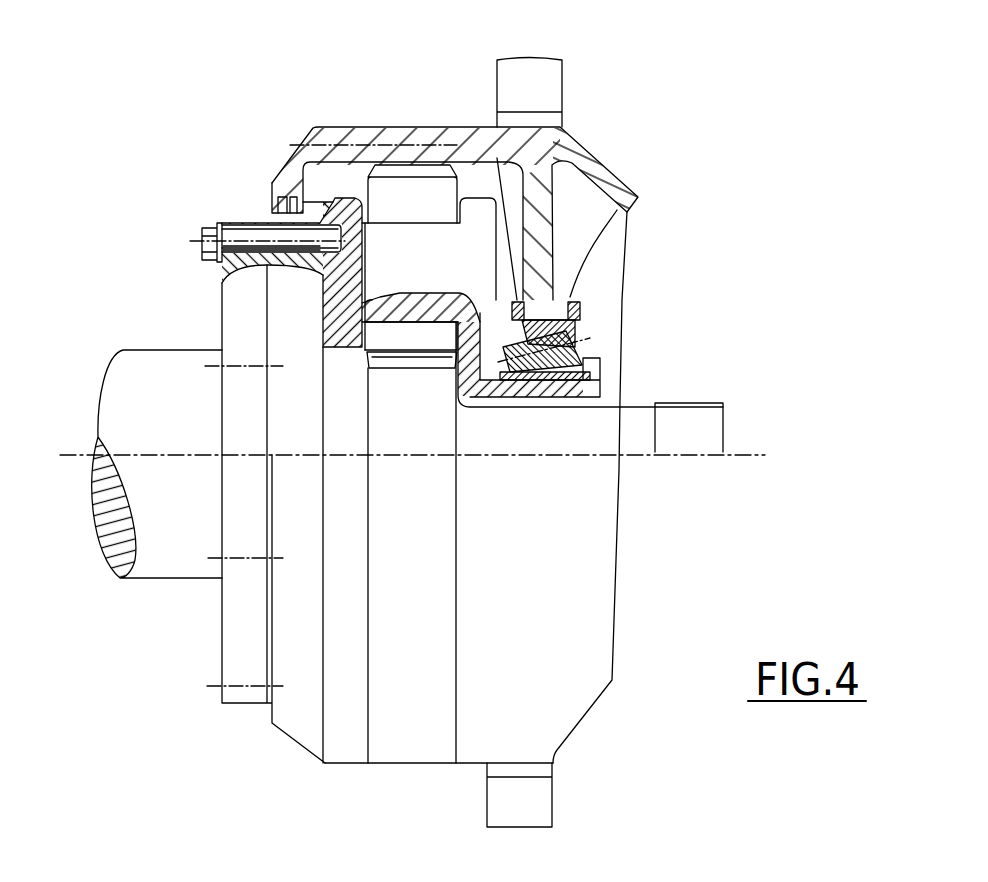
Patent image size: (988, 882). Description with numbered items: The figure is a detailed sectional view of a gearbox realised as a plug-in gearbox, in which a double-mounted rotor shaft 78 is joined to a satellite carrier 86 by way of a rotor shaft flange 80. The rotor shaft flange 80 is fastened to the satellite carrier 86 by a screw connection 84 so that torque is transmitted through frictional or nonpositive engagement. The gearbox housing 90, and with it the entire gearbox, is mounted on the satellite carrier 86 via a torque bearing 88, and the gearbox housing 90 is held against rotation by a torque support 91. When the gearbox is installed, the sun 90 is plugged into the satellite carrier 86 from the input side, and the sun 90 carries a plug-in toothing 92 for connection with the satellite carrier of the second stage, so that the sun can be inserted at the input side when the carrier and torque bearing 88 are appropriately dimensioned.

The rotor shaft 78 is at (155, 562).
The rotor shaft flange 80 is at (235, 635).
The screw connection 84 is at (233, 240).
The satellite carrier 86 is at (437, 281).
The torque bearing 88 is at (594, 333).
The gearbox housing 90 is at (587, 167).
The torque support 91 is at (550, 95).
The plug-in toothing 92 is at (710, 420).